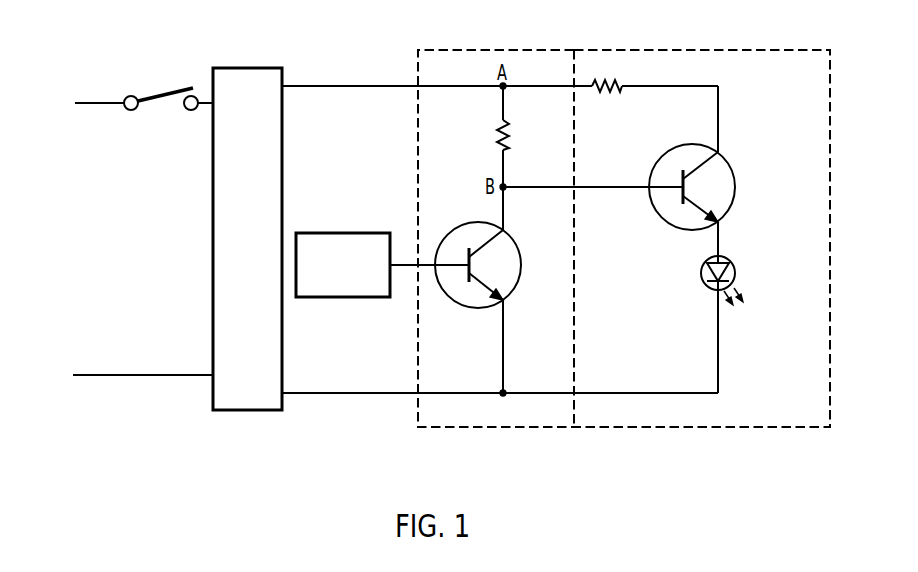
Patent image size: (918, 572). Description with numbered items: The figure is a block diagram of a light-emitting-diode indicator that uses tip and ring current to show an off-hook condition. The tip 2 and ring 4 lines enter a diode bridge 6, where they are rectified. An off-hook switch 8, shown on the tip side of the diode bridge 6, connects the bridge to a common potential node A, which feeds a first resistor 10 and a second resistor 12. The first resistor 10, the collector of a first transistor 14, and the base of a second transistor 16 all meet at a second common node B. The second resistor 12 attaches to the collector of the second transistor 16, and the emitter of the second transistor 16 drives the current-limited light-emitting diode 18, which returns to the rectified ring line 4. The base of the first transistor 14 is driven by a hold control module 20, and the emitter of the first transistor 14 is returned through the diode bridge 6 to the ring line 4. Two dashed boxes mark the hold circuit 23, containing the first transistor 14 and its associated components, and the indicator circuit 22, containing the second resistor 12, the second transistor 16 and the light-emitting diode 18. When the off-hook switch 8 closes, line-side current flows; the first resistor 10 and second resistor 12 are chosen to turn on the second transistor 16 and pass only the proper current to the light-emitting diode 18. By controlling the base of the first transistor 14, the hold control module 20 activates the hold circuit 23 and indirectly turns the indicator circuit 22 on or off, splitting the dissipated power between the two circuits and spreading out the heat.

The tip line 2 is at (107, 102).
The ring line 4 is at (107, 375).
The diode bridge 6 is at (283, 160).
The off-hook switch 8 is at (128, 110).
The resistor R1 10 is at (497, 140).
The resistor R2 12 is at (617, 90).
The transistor Q1 14 is at (517, 285).
The transistor Q2 16 is at (735, 195).
The LED 18 is at (702, 272).
The hold control module 20 is at (394, 263).
The indicator circuit 22 is at (815, 140).
The hold circuit 23 is at (520, 415).